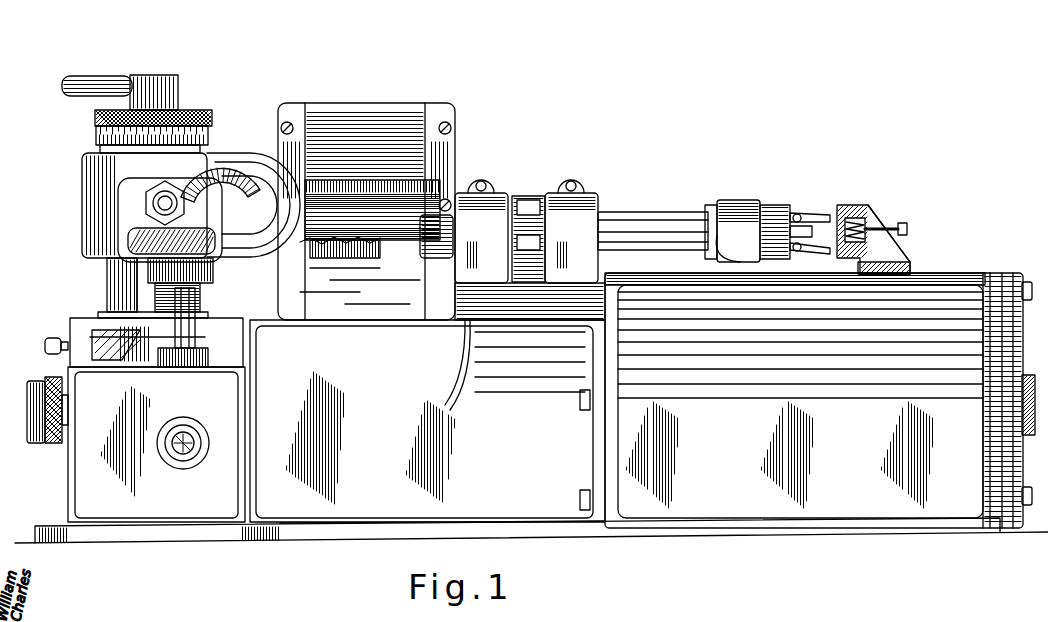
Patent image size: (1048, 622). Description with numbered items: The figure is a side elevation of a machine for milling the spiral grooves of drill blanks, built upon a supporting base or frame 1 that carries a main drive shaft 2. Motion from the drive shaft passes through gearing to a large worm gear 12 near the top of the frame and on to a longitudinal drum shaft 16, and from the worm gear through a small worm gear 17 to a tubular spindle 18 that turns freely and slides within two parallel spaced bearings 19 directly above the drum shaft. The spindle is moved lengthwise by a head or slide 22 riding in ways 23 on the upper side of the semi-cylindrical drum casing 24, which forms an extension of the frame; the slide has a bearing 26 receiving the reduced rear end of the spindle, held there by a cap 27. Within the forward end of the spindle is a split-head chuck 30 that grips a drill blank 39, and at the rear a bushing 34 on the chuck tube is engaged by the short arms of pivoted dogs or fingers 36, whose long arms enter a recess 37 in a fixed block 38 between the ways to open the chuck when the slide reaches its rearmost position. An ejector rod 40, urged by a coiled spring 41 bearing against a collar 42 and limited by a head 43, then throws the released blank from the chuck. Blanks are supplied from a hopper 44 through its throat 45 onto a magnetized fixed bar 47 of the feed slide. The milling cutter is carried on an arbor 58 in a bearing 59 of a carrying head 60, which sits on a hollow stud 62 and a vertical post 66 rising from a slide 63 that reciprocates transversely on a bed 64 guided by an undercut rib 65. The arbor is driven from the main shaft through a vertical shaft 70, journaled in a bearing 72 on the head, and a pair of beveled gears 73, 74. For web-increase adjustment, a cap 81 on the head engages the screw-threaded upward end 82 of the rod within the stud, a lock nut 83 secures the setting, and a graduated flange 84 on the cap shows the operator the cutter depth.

The supporting base or frame 1 is at (183, 512).
The main drive shaft 2 is at (185, 453).
The large worm gear 12 is at (530, 289).
The drum shaft 16 is at (1035, 405).
The small worm gear 17 is at (528, 197).
The spindle 18 is at (620, 222).
The bearings 19 is at (507, 197).
The head or slide 22 is at (705, 212).
The ways 23 is at (652, 280).
The drum casing 24 is at (945, 293).
The bearing 26 is at (733, 213).
The cap 27 is at (772, 212).
The chuck 30 is at (440, 240).
The bushing 34 is at (812, 220).
The dogs or fingers 36 is at (826, 218).
The recess 37 is at (867, 208).
The fixed block 38 is at (900, 256).
The drill blank 39 is at (390, 193).
The ejector rod 40 is at (798, 234).
The coiled spring 41 is at (877, 224).
The collar 42 is at (856, 207).
The head 43 is at (906, 228).
The hopper 44 is at (413, 115).
The throat 45 is at (430, 180).
The fixed bar 47 is at (322, 258).
The arbor 58 is at (160, 207).
The bearing 59 is at (245, 150).
The carrying head 60 is at (82, 190).
The stud 62 is at (150, 303).
The slide 63 is at (72, 318).
The bed 64 is at (65, 361).
The rib 65 is at (207, 342).
The vertical post 66 is at (100, 148).
The vertical shaft 70 is at (190, 316).
The bearing 72 is at (138, 283).
The beveled gear 73 is at (210, 250).
The beveled gear 74 is at (200, 166).
The cap 81 is at (205, 122).
The screw-threaded upward end 82 is at (155, 73).
The lock nut 83 is at (173, 84).
The flange 84 is at (96, 129).